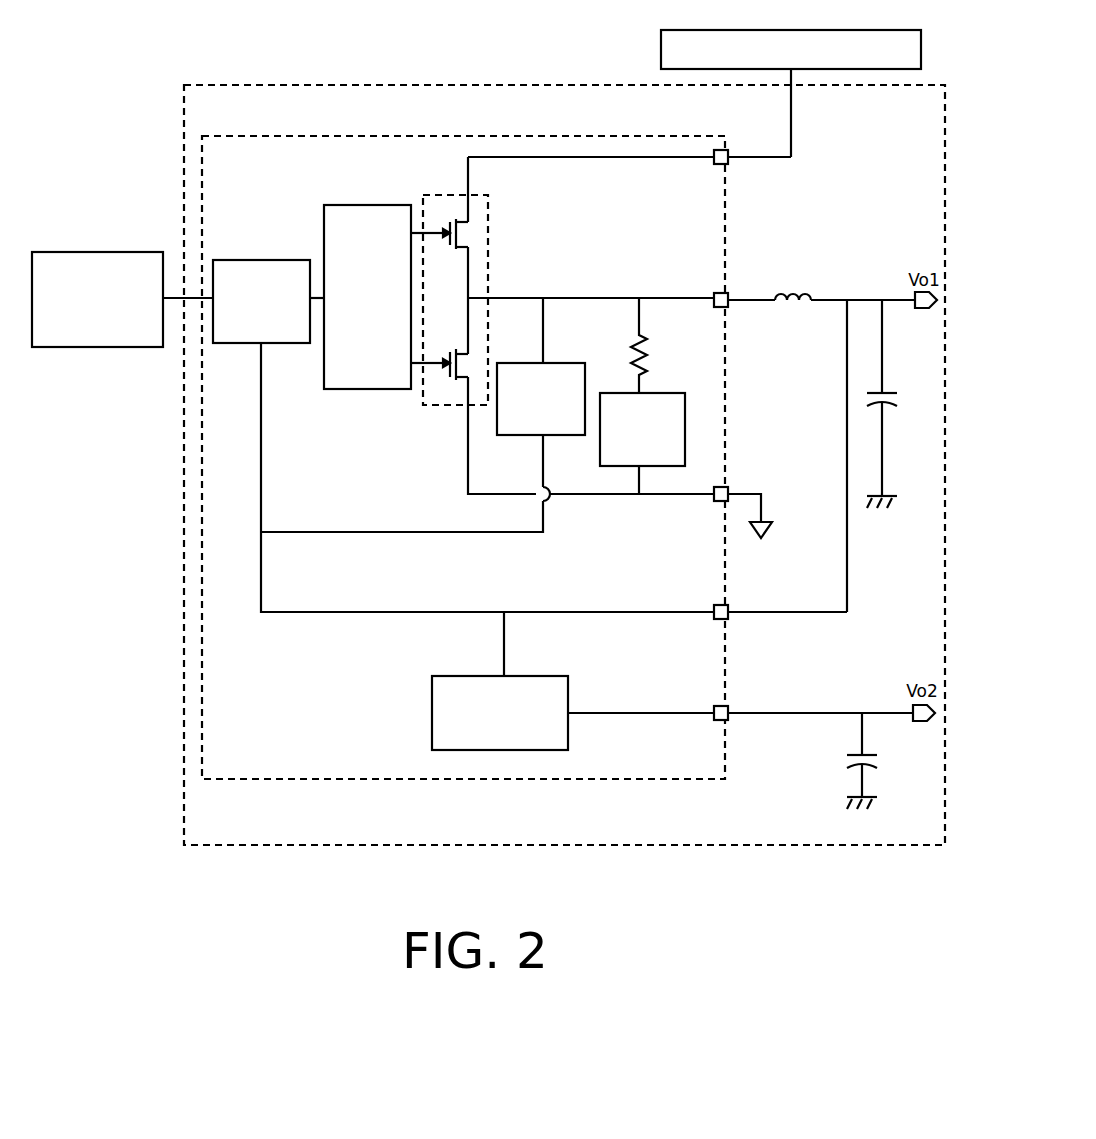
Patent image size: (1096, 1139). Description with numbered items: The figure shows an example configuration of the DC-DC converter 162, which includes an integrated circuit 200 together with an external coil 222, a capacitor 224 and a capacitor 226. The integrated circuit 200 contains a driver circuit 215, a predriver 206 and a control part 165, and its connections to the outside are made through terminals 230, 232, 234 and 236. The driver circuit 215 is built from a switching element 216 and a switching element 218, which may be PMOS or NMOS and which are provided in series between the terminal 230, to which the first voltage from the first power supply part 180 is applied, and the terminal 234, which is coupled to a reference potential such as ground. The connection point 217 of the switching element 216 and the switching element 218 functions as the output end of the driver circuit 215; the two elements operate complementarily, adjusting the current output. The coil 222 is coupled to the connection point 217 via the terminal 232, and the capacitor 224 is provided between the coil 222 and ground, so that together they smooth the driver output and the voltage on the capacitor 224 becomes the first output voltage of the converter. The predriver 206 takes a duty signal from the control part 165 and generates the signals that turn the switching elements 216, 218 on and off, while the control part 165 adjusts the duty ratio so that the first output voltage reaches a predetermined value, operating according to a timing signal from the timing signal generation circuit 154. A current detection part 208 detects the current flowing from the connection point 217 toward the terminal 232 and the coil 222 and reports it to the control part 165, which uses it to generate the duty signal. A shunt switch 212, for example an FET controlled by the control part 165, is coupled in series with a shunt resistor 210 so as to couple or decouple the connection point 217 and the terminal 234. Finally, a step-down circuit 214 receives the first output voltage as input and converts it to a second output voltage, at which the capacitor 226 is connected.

The timing signal generation circuit 154 is at (106, 252).
The DC-DC converter 162 is at (537, 86).
The control part 165 is at (261, 260).
The first power supply part 180 is at (787, 30).
The integrated circuit 200 is at (443, 136).
The predriver 206 is at (349, 205).
The current detection part 208 is at (566, 363).
The shunt resistor 210 is at (644, 334).
The shunt switch 212 is at (671, 393).
The step-down circuit 214 is at (563, 676).
The driver circuit 215 is at (486, 200).
The switching element 216 is at (460, 250).
The connection point 217 is at (470, 298).
The switching element 218 is at (458, 360).
The coil 222 is at (808, 292).
The capacitor 224 is at (890, 393).
The capacitor 226 is at (875, 755).
The terminal 230 is at (724, 150).
The terminal 232 is at (730, 292).
The terminal 234 is at (730, 487).
The terminal 236 is at (730, 606).